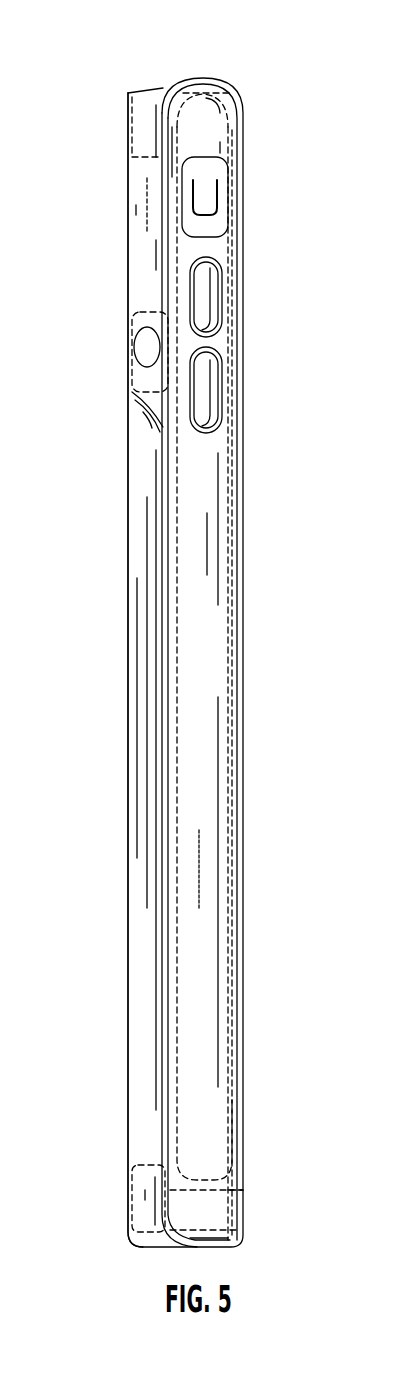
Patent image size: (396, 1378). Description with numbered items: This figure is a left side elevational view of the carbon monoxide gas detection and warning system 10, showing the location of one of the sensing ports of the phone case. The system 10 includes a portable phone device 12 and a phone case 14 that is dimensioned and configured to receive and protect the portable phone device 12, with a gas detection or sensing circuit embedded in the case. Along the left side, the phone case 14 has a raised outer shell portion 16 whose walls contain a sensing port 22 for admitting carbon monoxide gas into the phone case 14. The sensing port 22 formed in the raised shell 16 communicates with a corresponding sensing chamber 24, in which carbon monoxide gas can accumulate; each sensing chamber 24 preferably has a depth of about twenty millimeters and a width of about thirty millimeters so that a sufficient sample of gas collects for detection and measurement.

The carbon monoxide gas detection and warning system 10 is at (90, 123).
The portable phone device 12 is at (177, 712).
The phone case 14 is at (243, 580).
The raised outer shell portion 16 is at (128, 918).
The sensing port 22 is at (136, 328).
The sensing chamber 24 is at (153, 312).